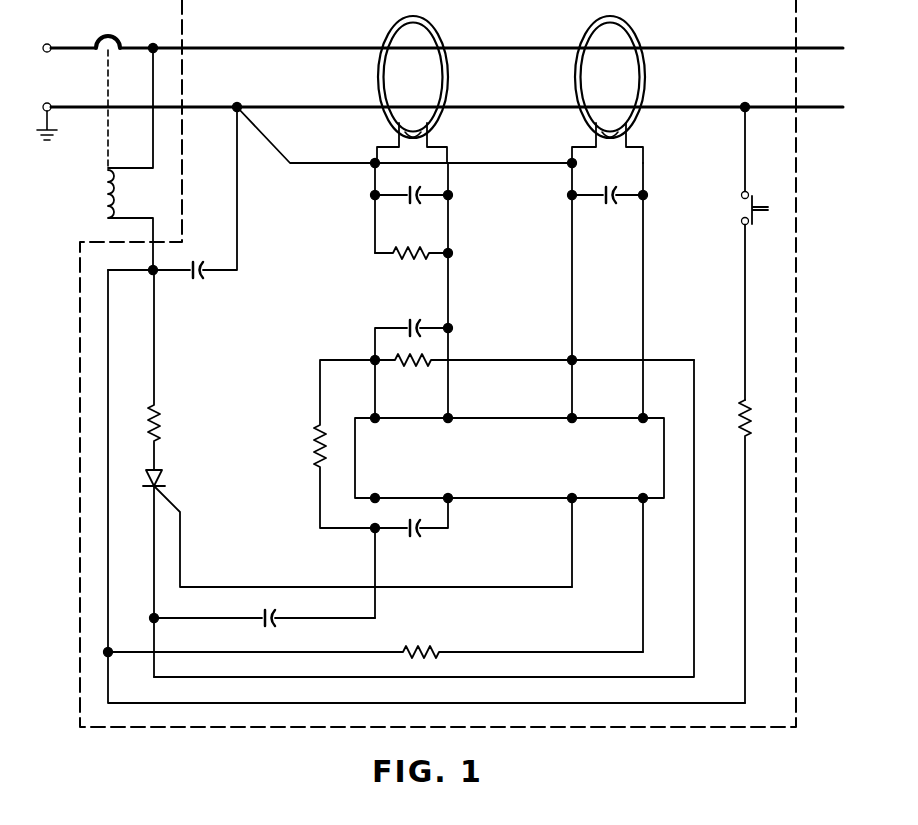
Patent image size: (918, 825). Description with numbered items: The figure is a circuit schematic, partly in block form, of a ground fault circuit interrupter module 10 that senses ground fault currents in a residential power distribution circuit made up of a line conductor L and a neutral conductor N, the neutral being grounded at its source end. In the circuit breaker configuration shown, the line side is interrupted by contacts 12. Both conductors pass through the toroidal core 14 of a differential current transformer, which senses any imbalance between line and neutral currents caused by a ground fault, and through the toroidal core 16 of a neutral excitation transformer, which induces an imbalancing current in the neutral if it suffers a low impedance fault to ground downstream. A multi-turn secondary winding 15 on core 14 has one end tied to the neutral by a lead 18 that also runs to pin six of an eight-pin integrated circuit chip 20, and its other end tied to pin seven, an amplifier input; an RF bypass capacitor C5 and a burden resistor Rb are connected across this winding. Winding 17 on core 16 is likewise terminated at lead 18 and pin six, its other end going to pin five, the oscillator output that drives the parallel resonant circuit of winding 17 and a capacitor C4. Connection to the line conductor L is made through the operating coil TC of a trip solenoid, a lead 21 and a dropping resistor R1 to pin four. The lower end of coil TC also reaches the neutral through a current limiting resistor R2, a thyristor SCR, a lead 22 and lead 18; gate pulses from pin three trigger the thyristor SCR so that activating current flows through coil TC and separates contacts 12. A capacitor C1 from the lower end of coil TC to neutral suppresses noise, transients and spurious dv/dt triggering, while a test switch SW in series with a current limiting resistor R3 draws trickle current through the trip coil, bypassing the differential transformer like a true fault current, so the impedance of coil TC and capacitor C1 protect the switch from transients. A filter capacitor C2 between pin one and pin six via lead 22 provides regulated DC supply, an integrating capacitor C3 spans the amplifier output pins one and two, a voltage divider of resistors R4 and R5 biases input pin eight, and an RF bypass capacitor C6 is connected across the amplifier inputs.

The ground fault circuit interrupter module 10 is at (798, 318).
The contacts 12 is at (120, 35).
The toroidal core of differential current transformer 14 is at (440, 22).
The secondary winding 15 is at (419, 122).
The toroidal core of neutral excitation current transformer 16 is at (634, 30).
The winding 17 is at (617, 122).
The lead 18 is at (500, 166).
The integrated circuit chip 20 is at (513, 467).
The lead 21 is at (110, 370).
The lead 22 is at (696, 548).
The line conductor L is at (70, 46).
The neutral conductor N is at (70, 105).
The operating coil of trip solenoid TC is at (101, 197).
The thyristor SCR is at (166, 486).
The test switch SW is at (740, 214).
The capacitor C1 is at (198, 282).
The filter capacitor C2 is at (270, 630).
The integrating capacitor C3 is at (415, 540).
The capacitor C4 is at (610, 206).
The RF bypass capacitor C5 is at (414, 206).
The RF bypass capacitor C6 is at (402, 322).
The dropping resistor R1 is at (420, 646).
The current limiting resistor R2 is at (165, 420).
The current limiting resistor R3 is at (752, 410).
The resistor R4 is at (306, 444).
The resistor R5 is at (410, 372).
The burden resistor Rb is at (396, 262).